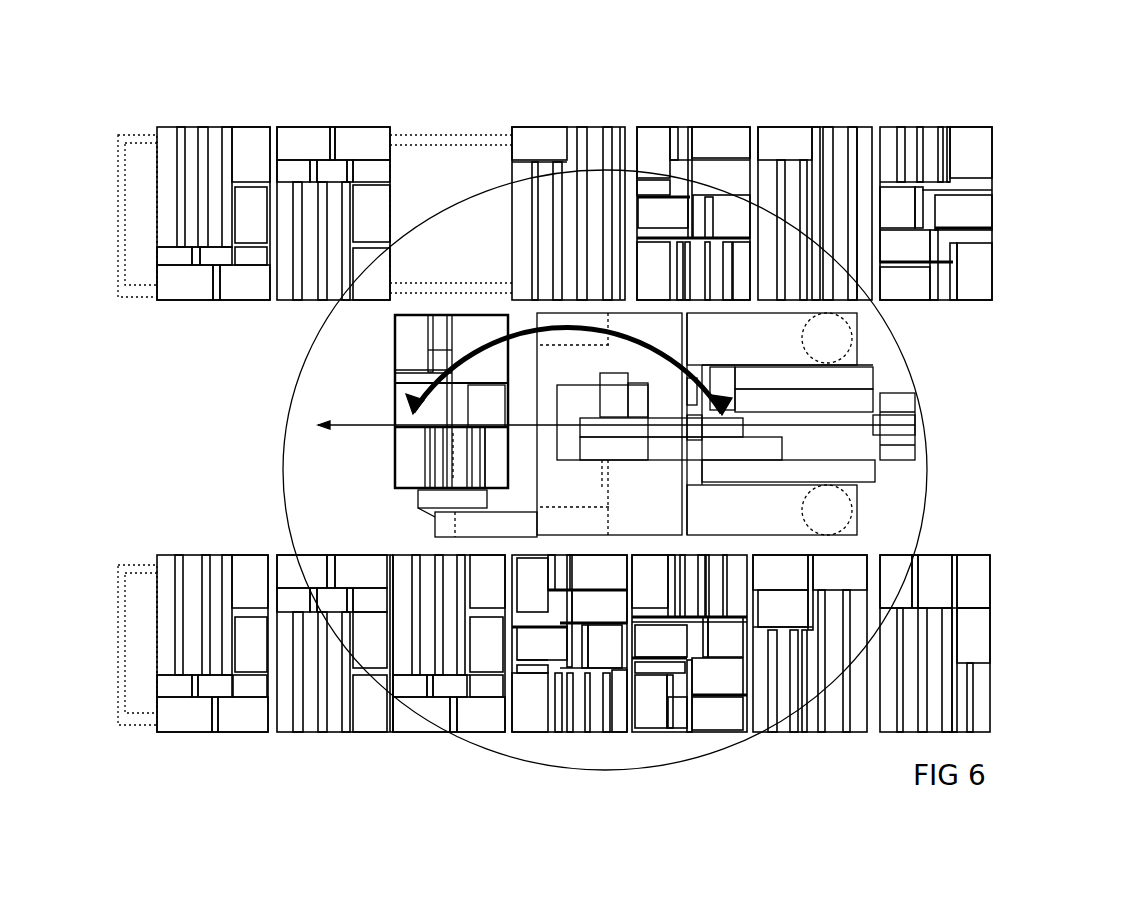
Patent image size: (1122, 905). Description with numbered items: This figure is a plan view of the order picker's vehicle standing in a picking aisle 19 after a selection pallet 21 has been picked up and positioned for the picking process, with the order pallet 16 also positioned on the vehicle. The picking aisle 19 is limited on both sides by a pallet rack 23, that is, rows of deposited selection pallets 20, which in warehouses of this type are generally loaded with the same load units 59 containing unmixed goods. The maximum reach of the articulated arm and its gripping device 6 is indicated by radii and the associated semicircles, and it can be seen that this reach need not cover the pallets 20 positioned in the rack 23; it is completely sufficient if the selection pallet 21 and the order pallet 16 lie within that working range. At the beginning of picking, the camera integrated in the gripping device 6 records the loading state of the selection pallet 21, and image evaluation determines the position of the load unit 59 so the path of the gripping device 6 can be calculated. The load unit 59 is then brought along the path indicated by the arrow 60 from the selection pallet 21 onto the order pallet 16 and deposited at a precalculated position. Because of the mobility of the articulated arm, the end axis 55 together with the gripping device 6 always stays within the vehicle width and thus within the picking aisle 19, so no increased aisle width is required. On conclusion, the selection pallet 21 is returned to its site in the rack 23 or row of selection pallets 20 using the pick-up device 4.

The pick-up device 4 is at (455, 530).
The gripping device 6 is at (848, 422).
The order pallet 16 is at (858, 470).
The picking aisle 19 is at (270, 480).
The selection pallets 20 is at (577, 192).
The selection pallet 21 is at (447, 457).
The pallet rack 23 is at (425, 135).
The end axis 55 is at (735, 415).
The load unit 59 is at (400, 388).
The arrow 60 is at (660, 340).